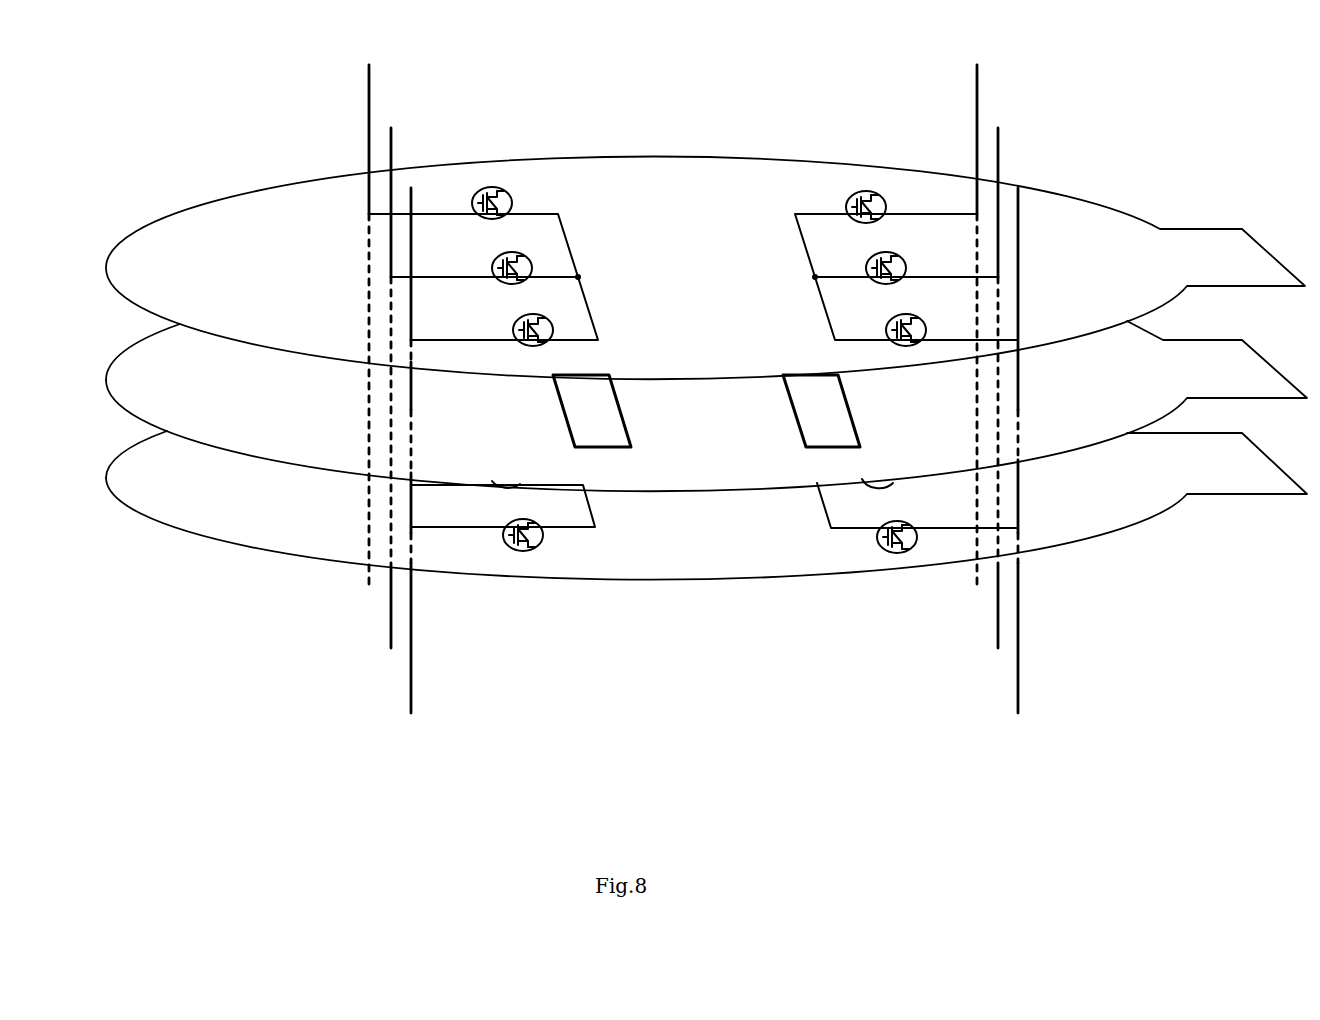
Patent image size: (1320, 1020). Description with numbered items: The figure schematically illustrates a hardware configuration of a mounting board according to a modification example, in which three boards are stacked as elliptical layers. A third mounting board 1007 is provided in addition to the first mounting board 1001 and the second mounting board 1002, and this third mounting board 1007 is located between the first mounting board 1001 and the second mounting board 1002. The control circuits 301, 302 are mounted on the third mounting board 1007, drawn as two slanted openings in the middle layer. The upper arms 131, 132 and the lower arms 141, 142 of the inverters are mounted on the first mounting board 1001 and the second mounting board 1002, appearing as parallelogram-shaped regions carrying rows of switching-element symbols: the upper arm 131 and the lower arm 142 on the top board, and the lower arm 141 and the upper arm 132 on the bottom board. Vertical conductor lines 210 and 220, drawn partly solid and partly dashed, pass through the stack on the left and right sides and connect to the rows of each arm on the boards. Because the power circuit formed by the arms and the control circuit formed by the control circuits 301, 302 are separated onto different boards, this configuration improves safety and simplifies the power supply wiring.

The first mounting board 1001 is at (227, 237).
The third mounting board 1007 is at (175, 377).
The second mounting board 1002 is at (222, 492).
The first conductor lines 210 is at (411, 190).
The second conductor lines 220 is at (1018, 190).
The upper arm 131 is at (527, 213).
The lower arm 142 is at (828, 213).
The lower arm 141 is at (490, 528).
The upper arm 132 is at (855, 530).
The control circuit 301 is at (816, 402).
The control circuit 302 is at (603, 423).